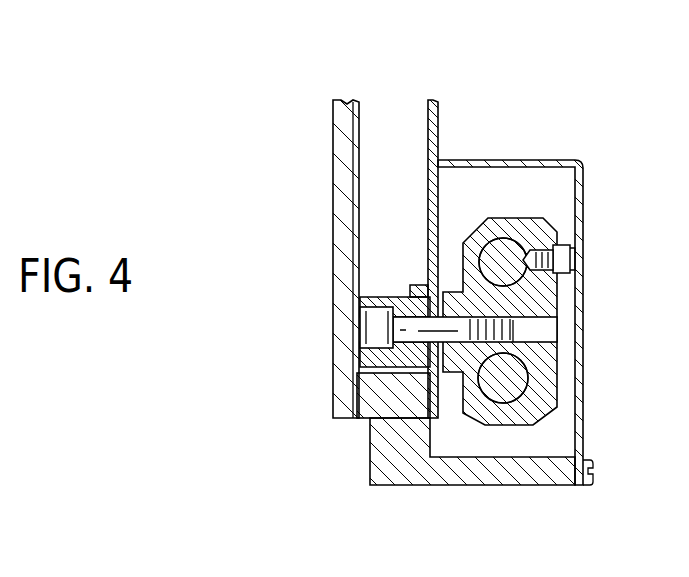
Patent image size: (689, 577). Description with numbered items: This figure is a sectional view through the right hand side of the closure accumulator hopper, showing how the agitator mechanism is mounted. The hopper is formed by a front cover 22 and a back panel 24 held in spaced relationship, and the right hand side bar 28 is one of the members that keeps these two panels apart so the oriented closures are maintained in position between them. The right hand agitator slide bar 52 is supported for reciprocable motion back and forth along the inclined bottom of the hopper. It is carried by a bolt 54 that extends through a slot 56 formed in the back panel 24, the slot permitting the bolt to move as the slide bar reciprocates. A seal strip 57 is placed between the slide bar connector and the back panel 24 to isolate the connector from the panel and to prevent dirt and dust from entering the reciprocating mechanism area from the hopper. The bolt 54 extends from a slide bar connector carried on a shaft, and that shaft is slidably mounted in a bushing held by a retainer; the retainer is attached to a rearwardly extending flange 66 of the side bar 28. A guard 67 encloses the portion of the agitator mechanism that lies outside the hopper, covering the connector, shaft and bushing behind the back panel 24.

The front cover 22 is at (333, 165).
The back panel 24 is at (428, 130).
The right hand side bar 28 is at (370, 455).
The right hand agitator slide bar 52 is at (391, 297).
The bolt 54 is at (525, 336).
The slot 56 is at (416, 296).
The seal strip 57 is at (440, 290).
The rearwardly extending flange 66 is at (476, 487).
The guard 67 is at (520, 160).